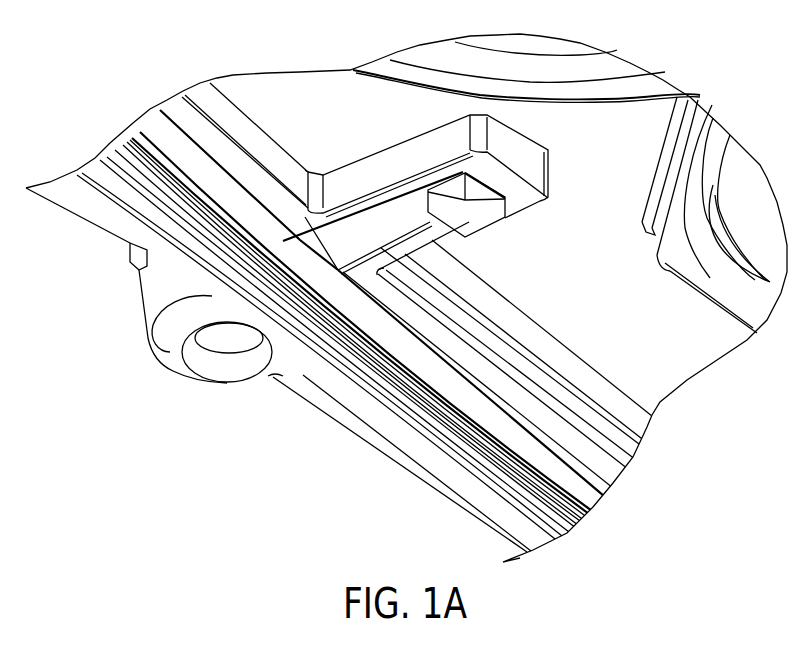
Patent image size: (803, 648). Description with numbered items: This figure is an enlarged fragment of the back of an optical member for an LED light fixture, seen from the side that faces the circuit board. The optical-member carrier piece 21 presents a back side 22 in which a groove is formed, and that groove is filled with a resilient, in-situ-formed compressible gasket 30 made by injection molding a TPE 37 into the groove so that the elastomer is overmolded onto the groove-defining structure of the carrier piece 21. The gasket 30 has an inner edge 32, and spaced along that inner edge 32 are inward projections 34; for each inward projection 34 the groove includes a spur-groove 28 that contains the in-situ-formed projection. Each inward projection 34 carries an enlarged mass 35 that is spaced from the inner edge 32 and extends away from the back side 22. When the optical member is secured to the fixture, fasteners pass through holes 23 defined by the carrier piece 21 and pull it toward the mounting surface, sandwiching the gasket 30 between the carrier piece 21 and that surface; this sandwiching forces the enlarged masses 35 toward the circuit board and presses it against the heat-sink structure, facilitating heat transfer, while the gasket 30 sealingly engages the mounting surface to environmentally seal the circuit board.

The optical-member carrier piece 21 is at (285, 107).
The back side 22 is at (680, 363).
The holes 23 is at (233, 337).
The spur-groove 28 is at (383, 210).
The in-situ-formed compressible gasket 30 is at (135, 152).
The inner edge 32 is at (527, 433).
The inward projections 34 is at (385, 225).
The enlarged mass 35 is at (472, 218).
The TPE 37 is at (567, 537).